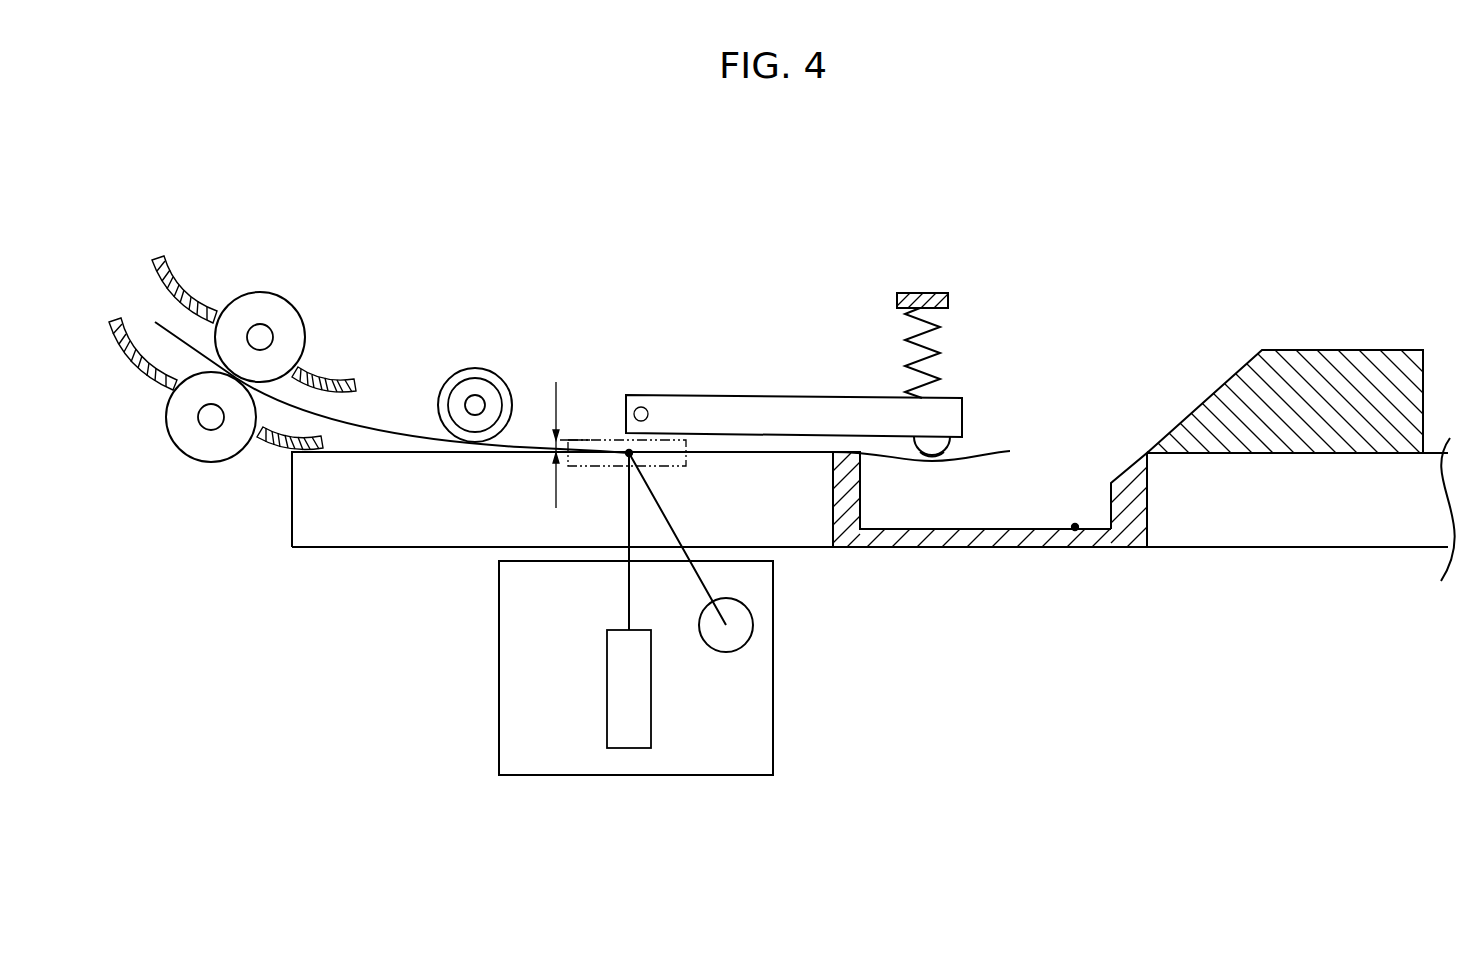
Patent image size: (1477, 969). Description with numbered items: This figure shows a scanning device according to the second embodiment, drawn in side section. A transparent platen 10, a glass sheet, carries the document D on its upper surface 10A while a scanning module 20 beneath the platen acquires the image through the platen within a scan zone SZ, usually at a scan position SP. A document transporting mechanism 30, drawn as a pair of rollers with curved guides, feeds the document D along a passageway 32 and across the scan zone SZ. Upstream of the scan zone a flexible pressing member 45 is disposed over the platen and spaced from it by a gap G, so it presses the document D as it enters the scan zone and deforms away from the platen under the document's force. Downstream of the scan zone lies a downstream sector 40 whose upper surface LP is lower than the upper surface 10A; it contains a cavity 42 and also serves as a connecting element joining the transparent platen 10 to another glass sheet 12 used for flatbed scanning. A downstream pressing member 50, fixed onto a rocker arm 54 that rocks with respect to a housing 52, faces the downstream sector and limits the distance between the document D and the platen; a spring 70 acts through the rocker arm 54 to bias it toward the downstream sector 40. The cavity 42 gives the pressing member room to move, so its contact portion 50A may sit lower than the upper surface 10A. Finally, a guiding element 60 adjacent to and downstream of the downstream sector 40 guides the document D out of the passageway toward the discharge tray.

The transparent platen 10 is at (323, 547).
The upper surface of the transparent platen 10A is at (430, 452).
The glass sheet 12 is at (1289, 539).
The scanning module 20 is at (502, 672).
The document transporting mechanism 30 is at (280, 315).
The passageway 32 is at (190, 332).
The downstream sector 40 is at (1120, 535).
The cavity 42 is at (1052, 508).
The flexible pressing member 45 is at (483, 369).
The downstream pressing member 50 is at (960, 447).
The contact portion 50A is at (937, 460).
The housing 52 is at (925, 293).
The rocker arm 54 is at (770, 410).
The guiding element 60 is at (1311, 368).
The spring 70 is at (942, 368).
The document D is at (382, 420).
The gap G is at (573, 445).
The scan position SP is at (630, 452).
The scan zone SZ is at (673, 465).
The upper surface of the downstream sector LP is at (1075, 527).